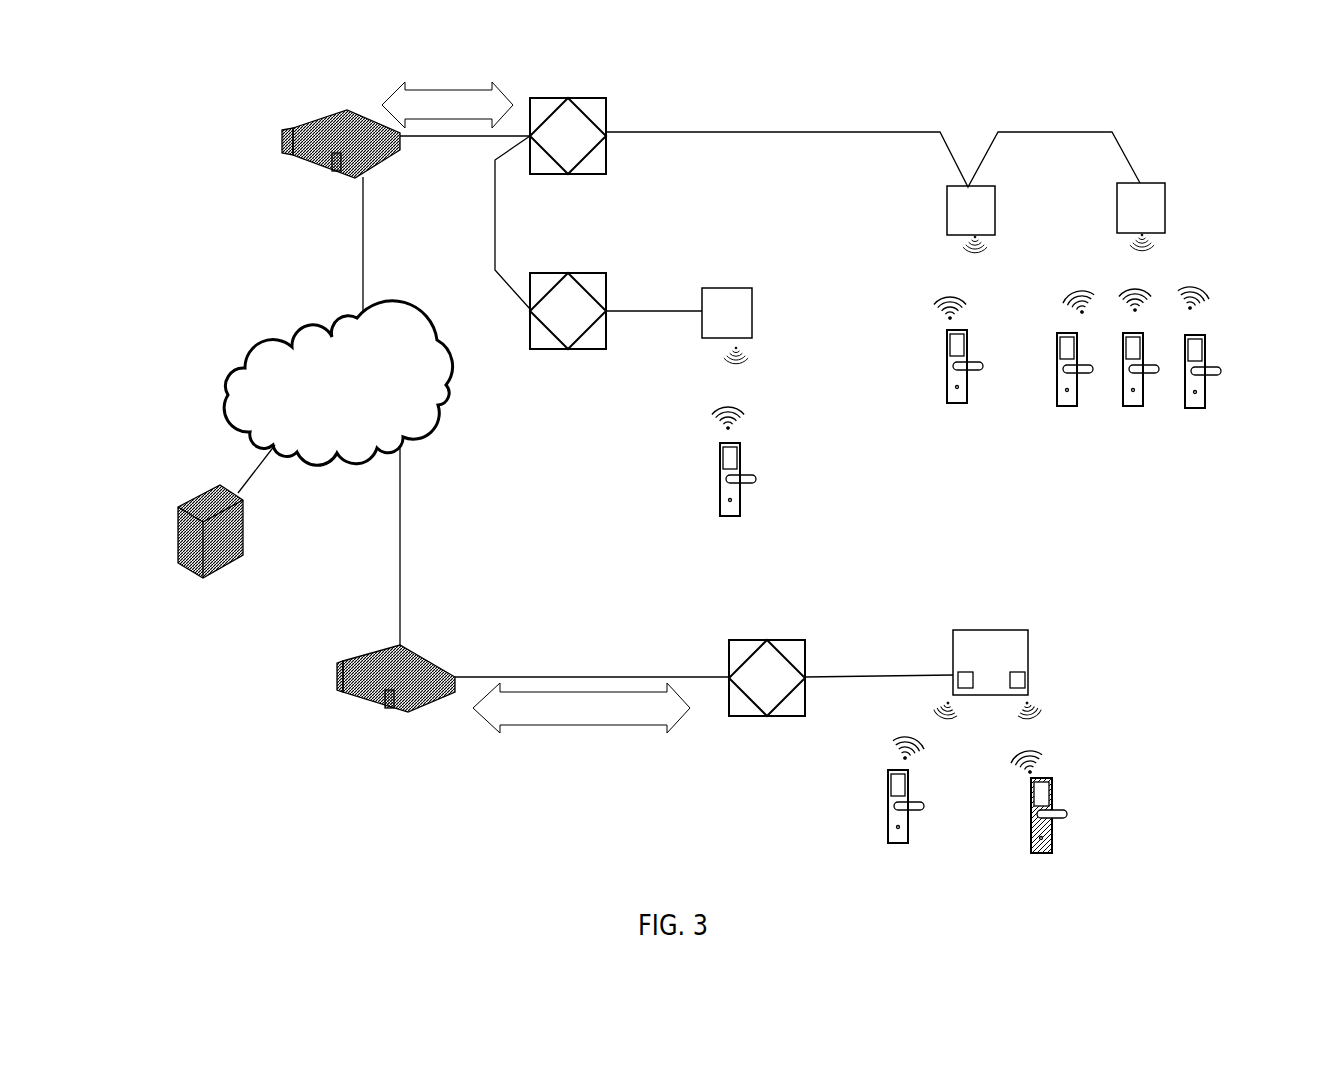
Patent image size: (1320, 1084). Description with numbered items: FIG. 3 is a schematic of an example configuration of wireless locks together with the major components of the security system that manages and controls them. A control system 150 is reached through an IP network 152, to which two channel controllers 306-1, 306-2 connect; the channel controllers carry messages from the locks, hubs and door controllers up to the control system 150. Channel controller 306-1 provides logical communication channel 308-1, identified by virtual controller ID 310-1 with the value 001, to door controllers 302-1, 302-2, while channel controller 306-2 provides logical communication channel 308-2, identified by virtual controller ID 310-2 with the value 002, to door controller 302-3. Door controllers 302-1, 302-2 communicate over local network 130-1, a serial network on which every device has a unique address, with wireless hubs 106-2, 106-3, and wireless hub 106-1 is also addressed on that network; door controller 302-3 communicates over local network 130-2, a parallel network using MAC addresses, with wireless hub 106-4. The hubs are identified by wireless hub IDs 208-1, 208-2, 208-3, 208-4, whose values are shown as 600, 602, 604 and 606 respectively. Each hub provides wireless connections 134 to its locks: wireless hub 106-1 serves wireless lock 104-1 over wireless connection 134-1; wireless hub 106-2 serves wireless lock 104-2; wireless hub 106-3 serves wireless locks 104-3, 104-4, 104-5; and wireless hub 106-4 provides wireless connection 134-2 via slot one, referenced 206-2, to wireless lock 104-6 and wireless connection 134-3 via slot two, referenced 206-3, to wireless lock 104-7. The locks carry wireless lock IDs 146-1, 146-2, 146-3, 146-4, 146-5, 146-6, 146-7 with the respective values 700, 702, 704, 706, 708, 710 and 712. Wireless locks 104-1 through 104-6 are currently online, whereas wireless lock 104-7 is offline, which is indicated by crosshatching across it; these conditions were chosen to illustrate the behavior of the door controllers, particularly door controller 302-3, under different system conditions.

The IP network 152 is at (338, 383).
The control system 150 is at (220, 572).
The channel controller 306-1 is at (302, 165).
The channel controller 306-2 is at (378, 700).
The virtual controller ID (VCID) 310-1 is at (425, 101).
The virtual controller ID (VCID) 310-2 is at (563, 710).
The logical communication channel 308-1 is at (502, 92).
The logical communication channel 308-2 is at (637, 728).
The VCID value 001 is at (448, 104).
The VCID value 002 is at (583, 708).
The door controller 302-1 is at (580, 98).
The door controller 302-2 is at (596, 272).
The door controller 302-3 is at (783, 640).
The local network 130-1 is at (762, 132).
The local network 130-2 is at (837, 672).
The wireless hub 106-1 is at (730, 288).
The wireless hub 106-2 is at (980, 186).
The wireless hub 106-3 is at (1155, 183).
The wireless hub 106-4 is at (1000, 630).
The wireless hub ID value 600 is at (717, 355).
The wireless hub ID value 602 is at (948, 233).
The wireless hub ID value 604 is at (1116, 232).
The wireless hub ID value 606 is at (1003, 686).
The wireless hub ID 208-1 is at (680, 355).
The wireless hub ID 208-2 is at (902, 223).
The wireless hub ID 208-3 is at (1075, 226).
The wireless hub ID 208-4 is at (1073, 657).
The slot 1 206-2 is at (960, 643).
The slot 2 206-3 is at (1013, 645).
The wireless connections 134 is at (955, 244).
The wireless connection 134-1 is at (753, 352).
The wireless connection 134-2 is at (962, 730).
The wireless connection 134-3 is at (1048, 705).
The wireless lock 104-1 is at (720, 488).
The wireless lock 104-2 is at (947, 372).
The wireless lock 104-3 is at (1057, 390).
The wireless lock 104-4 is at (1123, 395).
The wireless lock 104-5 is at (1185, 396).
The wireless lock 104-6 is at (888, 803).
The wireless lock 104-7 is at (1052, 825).
The wireless lock ID value 700 is at (734, 495).
The wireless lock ID value 702 is at (954, 384).
The wireless lock ID value 704 is at (1069, 388).
The wireless lock ID value 706 is at (1136, 387).
The wireless lock ID value 708 is at (1197, 387).
The wireless lock ID value 710 is at (904, 822).
The wireless lock ID value 712 is at (1046, 831).
The wireless lock ID 146-1 is at (712, 538).
The wireless lock ID 146-2 is at (947, 433).
The wireless lock ID 146-3 is at (1053, 440).
The wireless lock ID 146-4 is at (1135, 440).
The wireless lock ID 146-5 is at (1197, 435).
The wireless lock ID 146-6 is at (882, 860).
The wireless lock ID 146-7 is at (1025, 873).